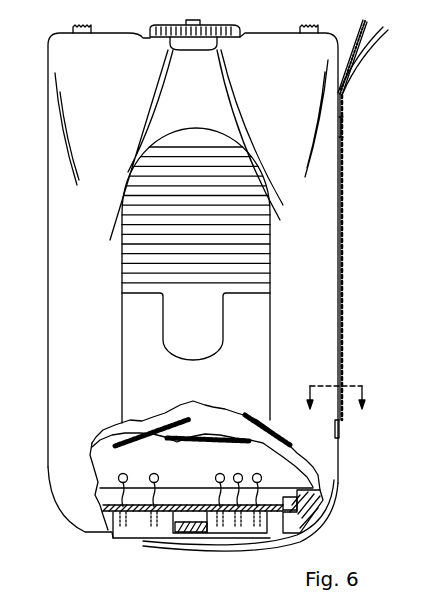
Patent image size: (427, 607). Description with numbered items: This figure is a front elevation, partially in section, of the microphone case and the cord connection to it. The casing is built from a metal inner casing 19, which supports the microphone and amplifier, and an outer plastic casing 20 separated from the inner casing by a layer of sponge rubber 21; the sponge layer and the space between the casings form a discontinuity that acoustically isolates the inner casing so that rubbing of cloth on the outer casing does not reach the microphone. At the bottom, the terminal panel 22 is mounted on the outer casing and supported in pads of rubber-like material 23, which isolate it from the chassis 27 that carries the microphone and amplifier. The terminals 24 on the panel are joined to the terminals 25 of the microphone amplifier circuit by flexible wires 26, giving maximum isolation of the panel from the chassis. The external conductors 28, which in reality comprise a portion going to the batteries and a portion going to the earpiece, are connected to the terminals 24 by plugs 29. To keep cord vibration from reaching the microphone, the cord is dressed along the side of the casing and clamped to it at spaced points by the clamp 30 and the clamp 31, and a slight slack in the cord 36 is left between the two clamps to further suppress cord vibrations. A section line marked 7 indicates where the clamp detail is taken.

The section line 7- 7 is at (336, 408).
The metal inner casing 19 is at (194, 438).
The outer plastic casing 20 is at (262, 424).
The layer of sponge rubber 21 is at (169, 420).
The terminal panel 22 is at (190, 508).
The pads of rubber-like material 23 is at (305, 512).
The terminals on the panel 24 is at (218, 527).
The terminals of the microphone amplifier circuit 25 is at (153, 474).
The flexible wires 26 is at (122, 473).
The chassis 27 is at (115, 476).
The external conductors 28 is at (276, 546).
The plugs 29 is at (101, 535).
The clamp 30 is at (339, 438).
The clamp 31 is at (342, 126).
The slack in the cord 36 is at (343, 284).